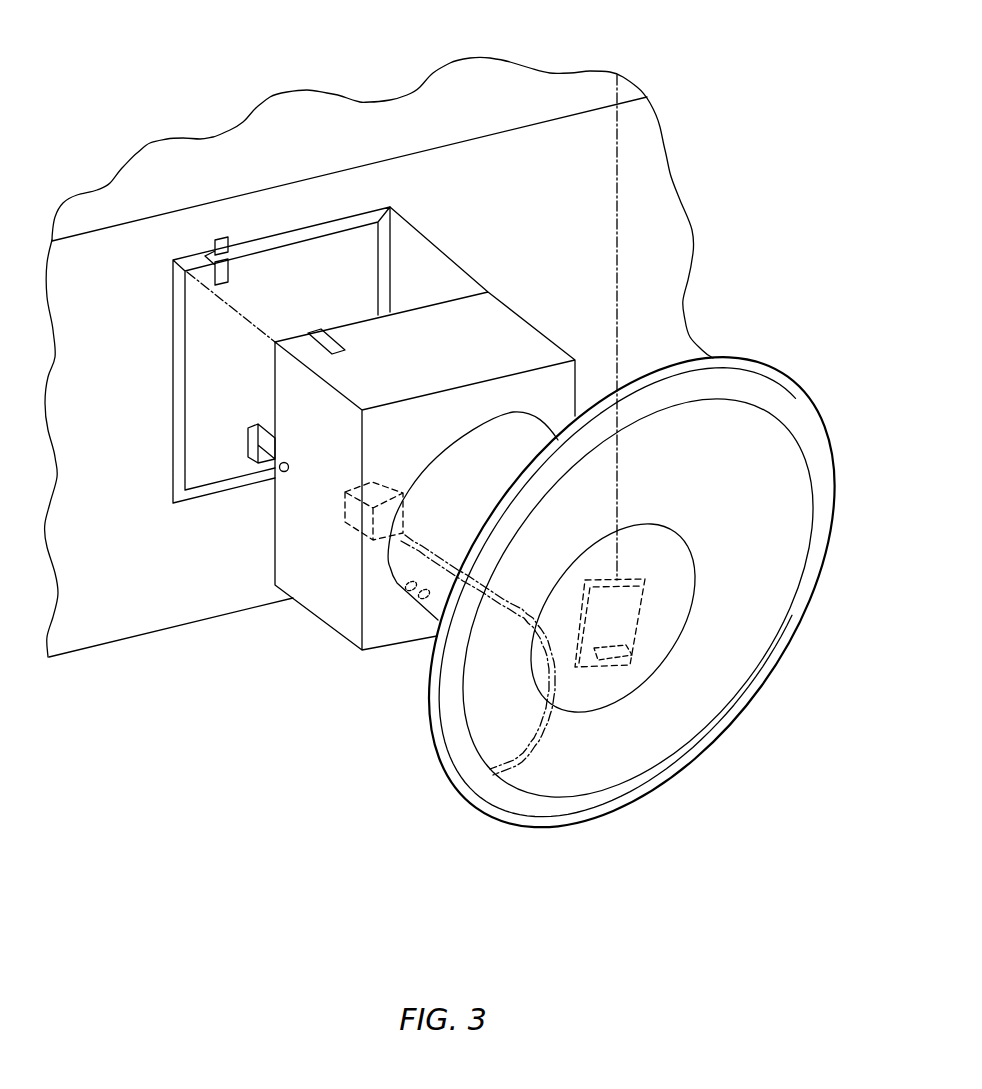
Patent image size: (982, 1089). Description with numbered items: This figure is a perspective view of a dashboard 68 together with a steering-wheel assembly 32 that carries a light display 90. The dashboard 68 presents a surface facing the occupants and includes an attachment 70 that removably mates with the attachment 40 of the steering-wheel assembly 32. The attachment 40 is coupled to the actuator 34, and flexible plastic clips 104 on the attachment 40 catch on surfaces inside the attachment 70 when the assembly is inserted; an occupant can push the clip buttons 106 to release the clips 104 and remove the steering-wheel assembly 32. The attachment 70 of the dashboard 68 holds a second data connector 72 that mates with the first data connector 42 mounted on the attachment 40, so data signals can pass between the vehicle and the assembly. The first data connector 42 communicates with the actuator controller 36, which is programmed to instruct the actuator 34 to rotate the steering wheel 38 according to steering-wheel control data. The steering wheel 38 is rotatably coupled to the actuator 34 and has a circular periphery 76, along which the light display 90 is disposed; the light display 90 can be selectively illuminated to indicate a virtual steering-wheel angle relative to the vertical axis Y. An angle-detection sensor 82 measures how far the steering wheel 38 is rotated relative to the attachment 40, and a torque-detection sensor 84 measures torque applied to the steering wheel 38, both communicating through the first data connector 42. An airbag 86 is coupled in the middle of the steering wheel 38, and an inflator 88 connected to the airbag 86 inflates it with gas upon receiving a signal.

The steering-wheel assembly 32 is at (660, 340).
The actuator 34 is at (433, 433).
The actuator controller 36 is at (353, 527).
The steering wheel 38 is at (757, 360).
The attachment 40 is at (275, 543).
The first data connector 42 is at (348, 342).
The dashboard 68 is at (532, 182).
The attachment 70 is at (173, 325).
The second data connector 72 is at (232, 272).
The circular periphery 76 is at (440, 757).
The angle-detection sensor 82 is at (405, 594).
The torque-detection sensor 84 is at (420, 602).
The airbag 86 is at (647, 602).
The inflator 88 is at (630, 658).
The light display 90 is at (573, 807).
The clips 104 is at (247, 440).
The clip buttons 106 is at (275, 470).
The vertical axis Y is at (621, 188).